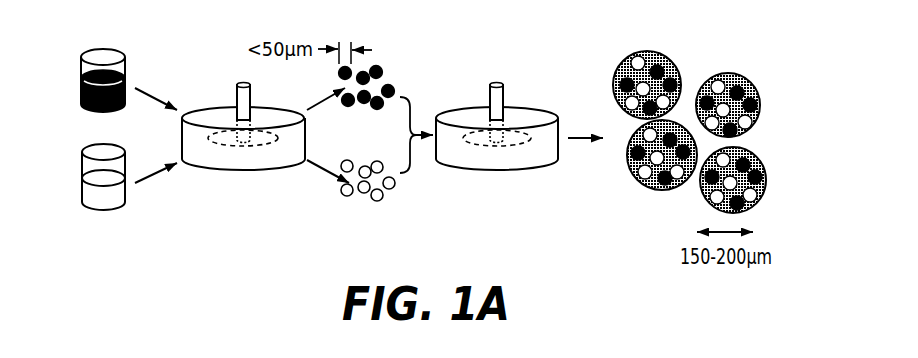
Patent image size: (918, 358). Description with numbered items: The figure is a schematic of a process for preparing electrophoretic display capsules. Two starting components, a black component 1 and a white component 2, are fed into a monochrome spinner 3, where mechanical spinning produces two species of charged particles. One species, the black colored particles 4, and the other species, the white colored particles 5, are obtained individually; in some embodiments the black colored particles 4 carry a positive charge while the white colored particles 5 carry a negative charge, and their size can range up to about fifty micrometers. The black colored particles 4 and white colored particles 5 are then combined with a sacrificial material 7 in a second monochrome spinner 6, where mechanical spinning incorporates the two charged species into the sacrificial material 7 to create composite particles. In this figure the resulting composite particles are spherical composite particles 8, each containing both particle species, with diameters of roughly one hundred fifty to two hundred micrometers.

The black component 1 is at (80, 106).
The white component 2 is at (112, 208).
The monochrome spinner 3 is at (243, 116).
The black colored particles 4 is at (380, 65).
The white colored particles 5 is at (393, 188).
The monochrome spinner 6 is at (497, 116).
The sacrificial material 7 is at (667, 57).
The spherical composite particles 8 is at (645, 185).